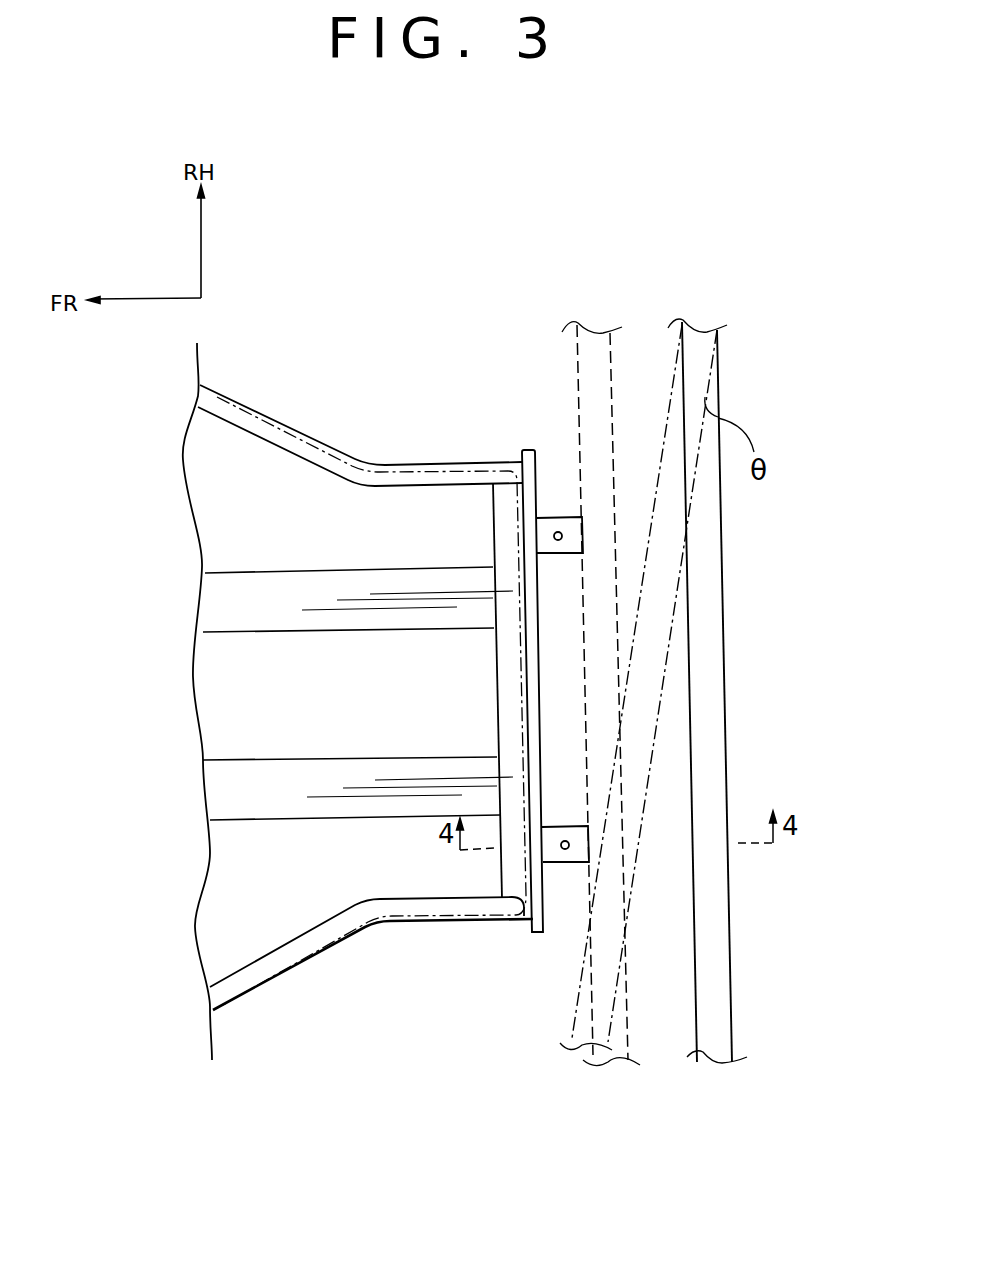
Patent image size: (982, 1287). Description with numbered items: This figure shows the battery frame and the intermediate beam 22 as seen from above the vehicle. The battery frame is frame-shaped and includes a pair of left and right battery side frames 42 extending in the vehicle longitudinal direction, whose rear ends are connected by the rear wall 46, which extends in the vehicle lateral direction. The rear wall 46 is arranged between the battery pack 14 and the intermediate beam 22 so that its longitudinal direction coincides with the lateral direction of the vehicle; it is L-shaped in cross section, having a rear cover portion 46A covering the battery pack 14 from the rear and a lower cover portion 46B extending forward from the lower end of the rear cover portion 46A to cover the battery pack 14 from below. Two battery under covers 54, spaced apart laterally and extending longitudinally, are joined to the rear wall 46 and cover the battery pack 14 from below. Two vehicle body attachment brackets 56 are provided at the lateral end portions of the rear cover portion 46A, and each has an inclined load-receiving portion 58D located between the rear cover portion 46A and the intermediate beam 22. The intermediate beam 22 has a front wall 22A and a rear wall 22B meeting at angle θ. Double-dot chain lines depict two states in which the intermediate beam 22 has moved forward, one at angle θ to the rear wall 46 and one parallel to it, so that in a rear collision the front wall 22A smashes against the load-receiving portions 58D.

The battery pack 14 is at (313, 445).
The intermediate beam 22 is at (657, 728).
The front wall 22A is at (697, 932).
The rear wall 22B is at (733, 923).
The battery side frame 42 is at (278, 418).
The rear wall 46 is at (505, 691).
The rear cover portion 46A is at (538, 670).
The lower cover portion 46B is at (505, 726).
The battery under cover 54 is at (286, 633).
The vehicle body attachment bracket 56 is at (557, 515).
The load-receiving portion 58D is at (583, 524).